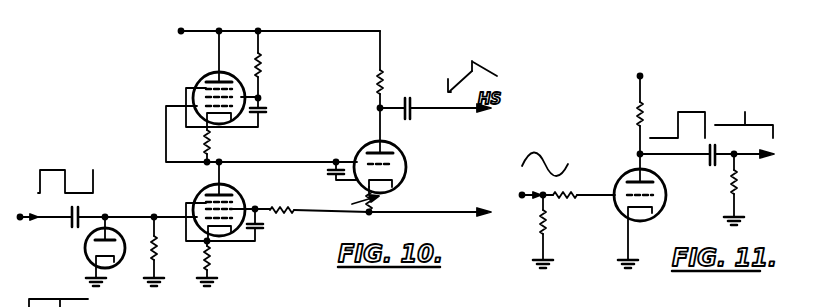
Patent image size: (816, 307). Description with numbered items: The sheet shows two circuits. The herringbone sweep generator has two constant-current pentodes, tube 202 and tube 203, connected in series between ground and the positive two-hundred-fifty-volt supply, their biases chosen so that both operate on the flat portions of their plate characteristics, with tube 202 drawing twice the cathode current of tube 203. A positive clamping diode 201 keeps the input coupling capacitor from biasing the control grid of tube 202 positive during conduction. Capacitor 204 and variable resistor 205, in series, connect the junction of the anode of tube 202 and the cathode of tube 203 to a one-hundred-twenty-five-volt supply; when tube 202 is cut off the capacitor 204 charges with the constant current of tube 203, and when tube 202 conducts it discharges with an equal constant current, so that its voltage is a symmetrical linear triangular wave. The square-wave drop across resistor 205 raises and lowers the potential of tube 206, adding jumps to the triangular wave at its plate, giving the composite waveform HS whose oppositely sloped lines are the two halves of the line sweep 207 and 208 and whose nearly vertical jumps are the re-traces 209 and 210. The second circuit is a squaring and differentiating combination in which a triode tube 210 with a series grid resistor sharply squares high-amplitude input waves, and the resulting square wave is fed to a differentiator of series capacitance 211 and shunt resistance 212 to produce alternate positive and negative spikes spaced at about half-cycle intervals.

In FIG. 10, the positive clamping diode 201 is at (86, 247).
In FIG. 10, the constant-current pentode 202 is at (201, 192).
In FIG. 10, the constant-current pentode 203 is at (198, 81).
In FIG. 10, the capacitor 204 is at (331, 177).
In FIG. 10, the variable resistor 205 is at (352, 199).
In FIG. 10, the tube 206 is at (364, 144).
In FIG. 10, the half of the line sweep 207 is at (465, 90).
In FIG. 10, the half of the line sweep 208 is at (487, 68).
In FIG. 10, the re-trace 209 is at (448, 85).
In FIG. 10, the re-trace / triode tube 210 is at (471, 64).
In FIG. 11, the re-trace / triode tube 210 is at (627, 169).
In FIG. 11, the series capacitance 211 is at (712, 169).
In FIG. 11, the shunt resistance 212 is at (733, 195).